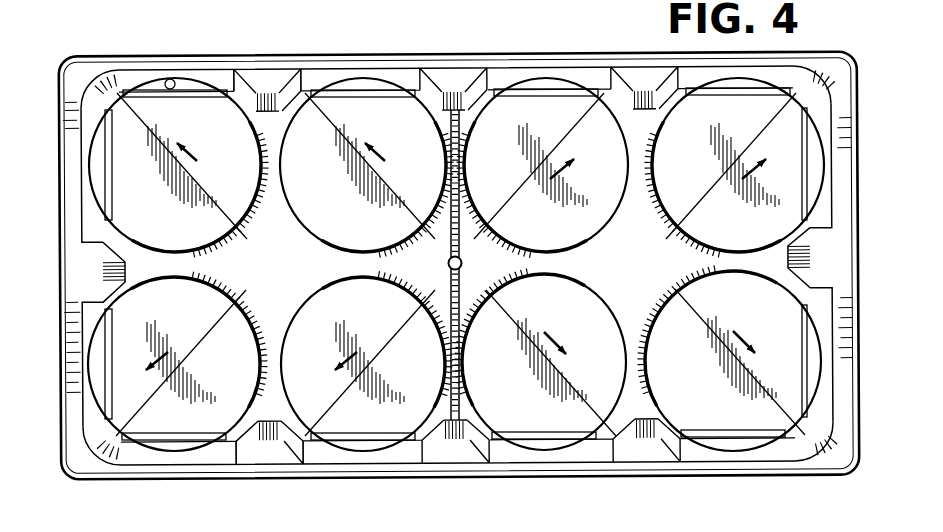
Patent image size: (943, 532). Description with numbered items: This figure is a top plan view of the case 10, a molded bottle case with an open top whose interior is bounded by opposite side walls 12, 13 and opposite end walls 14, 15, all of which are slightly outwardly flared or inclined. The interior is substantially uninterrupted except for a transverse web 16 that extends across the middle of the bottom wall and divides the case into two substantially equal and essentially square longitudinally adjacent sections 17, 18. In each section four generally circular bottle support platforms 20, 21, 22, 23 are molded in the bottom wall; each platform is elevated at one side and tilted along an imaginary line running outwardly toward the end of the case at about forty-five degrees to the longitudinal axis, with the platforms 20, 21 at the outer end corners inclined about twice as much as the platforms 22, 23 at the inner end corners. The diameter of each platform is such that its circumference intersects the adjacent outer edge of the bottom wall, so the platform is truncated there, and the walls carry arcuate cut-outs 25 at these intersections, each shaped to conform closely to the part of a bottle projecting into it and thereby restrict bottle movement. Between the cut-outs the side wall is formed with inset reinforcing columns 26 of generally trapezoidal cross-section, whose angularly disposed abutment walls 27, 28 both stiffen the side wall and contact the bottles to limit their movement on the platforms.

The case 10 is at (182, 484).
The side wall 12 is at (384, 468).
The side wall 13 is at (372, 60).
The end wall 14 is at (60, 331).
The end wall 15 is at (862, 340).
The transverse web 16 is at (452, 230).
The section 17 is at (250, 291).
The section 18 is at (610, 273).
The bottle support platform 20 is at (240, 193).
The bottle support platform 21 is at (240, 357).
The bottle support platform 22 is at (345, 228).
The bottle support platform 23 is at (408, 313).
The cut-out 25 is at (172, 84).
The inset reinforcing column 26 is at (302, 88).
The abutment wall 27 is at (290, 435).
The abutment wall 28 is at (247, 90).